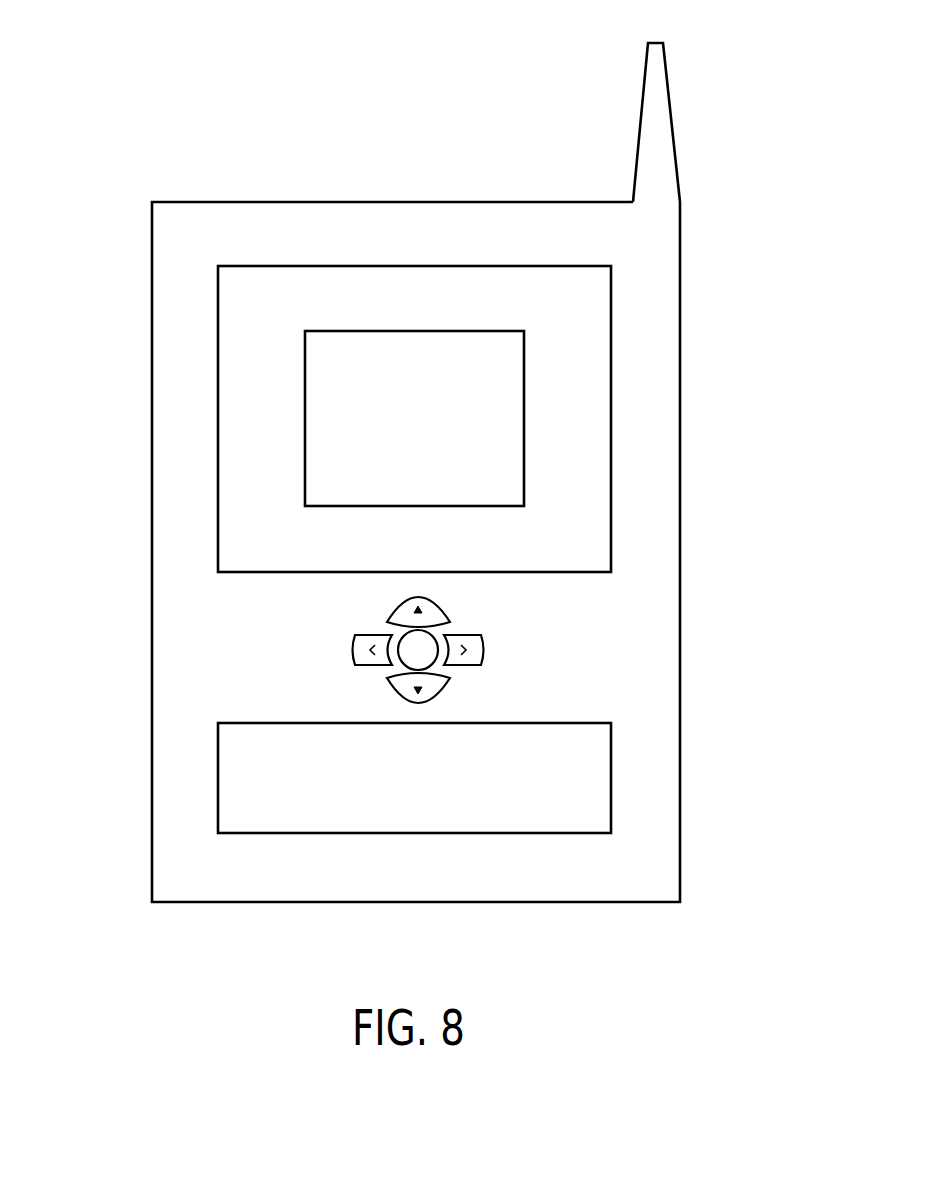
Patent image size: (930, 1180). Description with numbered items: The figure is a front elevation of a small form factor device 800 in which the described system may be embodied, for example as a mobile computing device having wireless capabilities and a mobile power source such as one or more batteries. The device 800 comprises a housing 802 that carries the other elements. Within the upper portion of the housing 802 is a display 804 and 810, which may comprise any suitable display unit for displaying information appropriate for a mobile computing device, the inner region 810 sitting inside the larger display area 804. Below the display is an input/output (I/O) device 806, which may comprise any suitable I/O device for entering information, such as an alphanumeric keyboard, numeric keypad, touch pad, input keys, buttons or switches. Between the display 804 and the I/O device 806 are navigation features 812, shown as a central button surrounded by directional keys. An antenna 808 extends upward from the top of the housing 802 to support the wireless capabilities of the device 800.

The small form factor device 800 is at (397, 472).
The housing 802 is at (152, 640).
The display 804 is at (611, 322).
The input/output (I/O) device 806 is at (611, 778).
The antenna 808 is at (641, 118).
The display 810 is at (415, 331).
The navigation features 812 is at (513, 651).